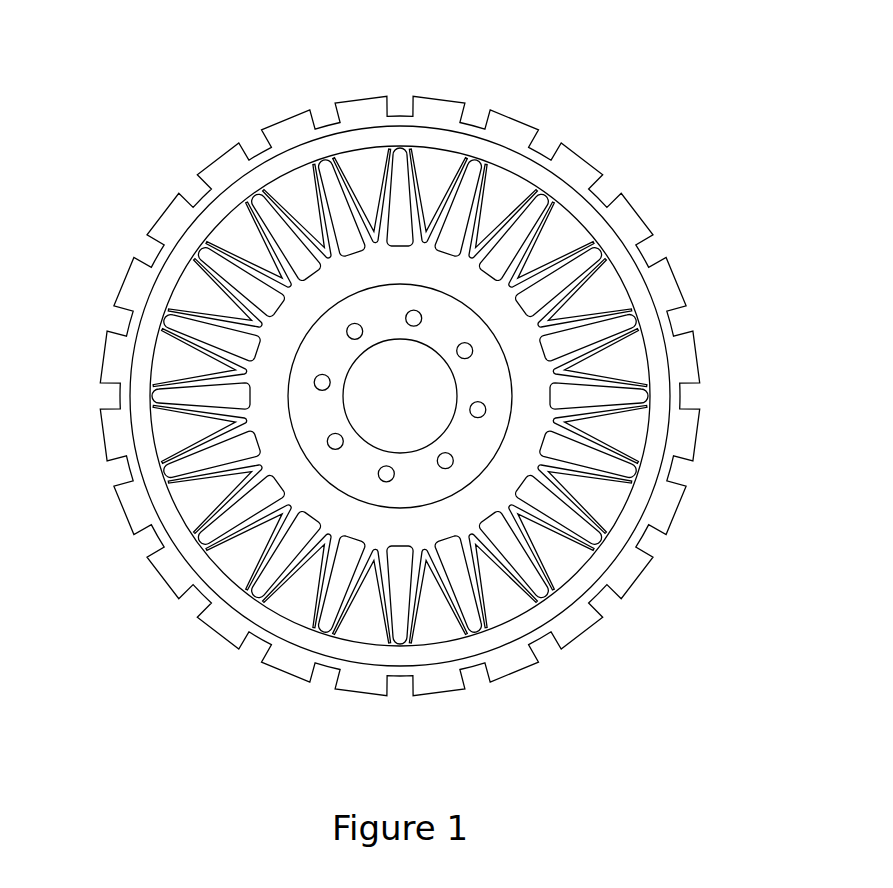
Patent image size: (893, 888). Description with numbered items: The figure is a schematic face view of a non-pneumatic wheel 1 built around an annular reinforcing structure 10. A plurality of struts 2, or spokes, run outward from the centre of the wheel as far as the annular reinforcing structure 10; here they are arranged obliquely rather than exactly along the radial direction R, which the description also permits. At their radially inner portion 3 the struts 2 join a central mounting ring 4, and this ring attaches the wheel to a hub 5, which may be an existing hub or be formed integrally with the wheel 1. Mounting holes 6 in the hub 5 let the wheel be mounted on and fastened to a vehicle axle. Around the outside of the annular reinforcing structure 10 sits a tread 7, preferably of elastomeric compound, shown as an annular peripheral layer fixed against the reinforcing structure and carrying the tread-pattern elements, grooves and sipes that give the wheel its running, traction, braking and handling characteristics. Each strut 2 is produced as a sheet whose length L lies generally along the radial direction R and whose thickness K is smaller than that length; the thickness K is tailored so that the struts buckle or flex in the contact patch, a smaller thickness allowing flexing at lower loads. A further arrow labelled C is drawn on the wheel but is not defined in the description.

The non-pneumatic wheel 1 is at (396, 371).
The struts 2 is at (175, 348).
The radially inner portion 3 is at (393, 238).
The central mounting ring 4 is at (355, 363).
The hub 5 is at (509, 425).
The mounting holes 6 is at (456, 457).
The tread 7 is at (573, 172).
The annular reinforcing structure 10 is at (612, 247).
The radial direction R is at (441, 355).
The length L is at (424, 232).
The circumferential direction C is at (323, 706).
The thickness K is at (508, 562).